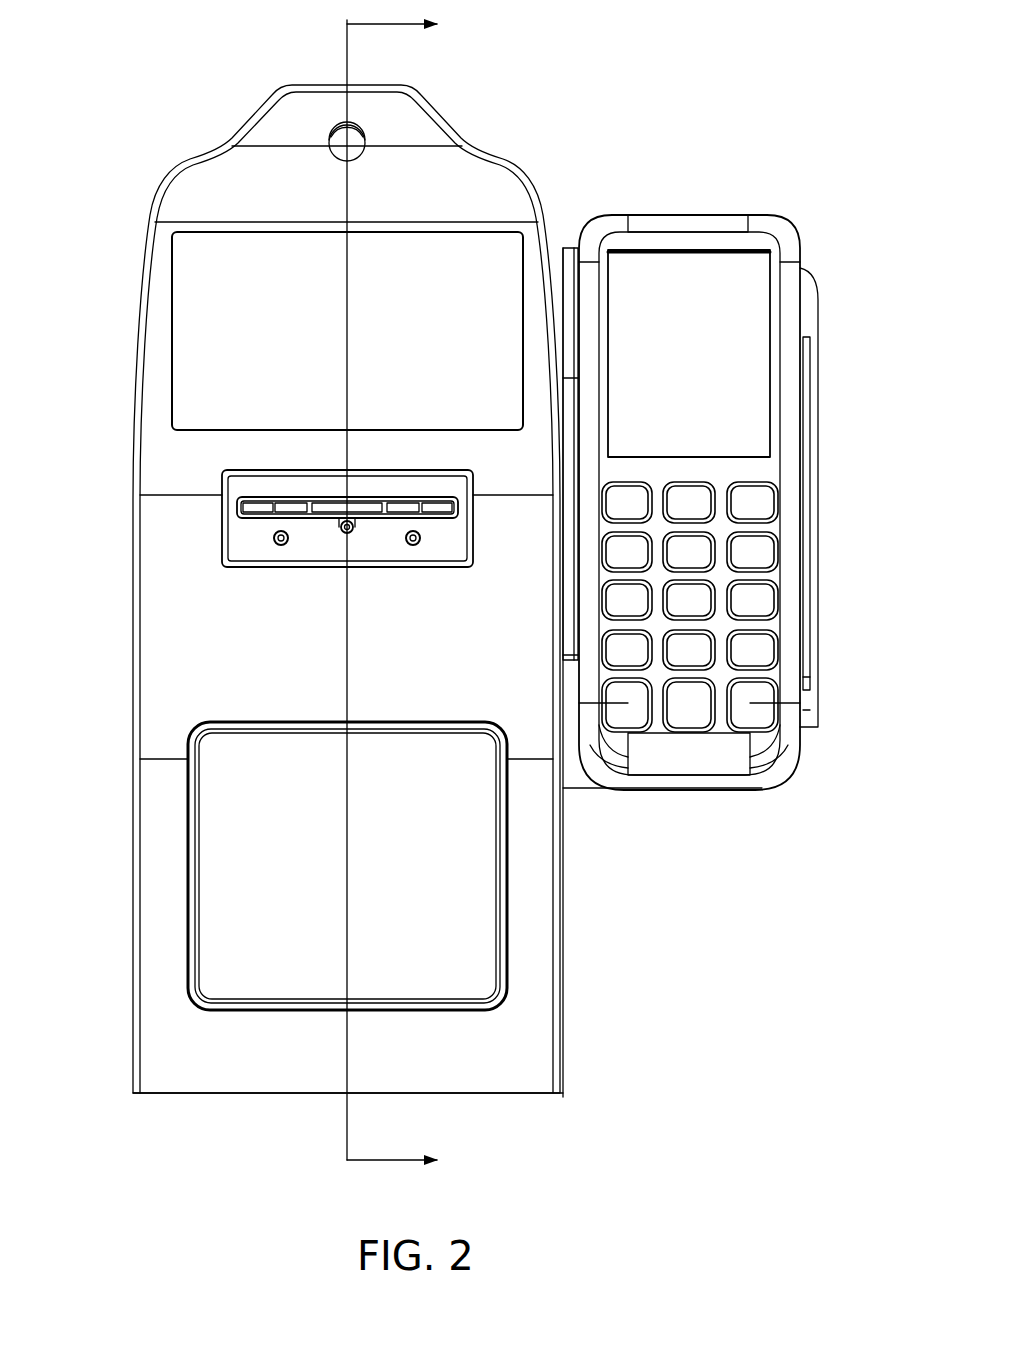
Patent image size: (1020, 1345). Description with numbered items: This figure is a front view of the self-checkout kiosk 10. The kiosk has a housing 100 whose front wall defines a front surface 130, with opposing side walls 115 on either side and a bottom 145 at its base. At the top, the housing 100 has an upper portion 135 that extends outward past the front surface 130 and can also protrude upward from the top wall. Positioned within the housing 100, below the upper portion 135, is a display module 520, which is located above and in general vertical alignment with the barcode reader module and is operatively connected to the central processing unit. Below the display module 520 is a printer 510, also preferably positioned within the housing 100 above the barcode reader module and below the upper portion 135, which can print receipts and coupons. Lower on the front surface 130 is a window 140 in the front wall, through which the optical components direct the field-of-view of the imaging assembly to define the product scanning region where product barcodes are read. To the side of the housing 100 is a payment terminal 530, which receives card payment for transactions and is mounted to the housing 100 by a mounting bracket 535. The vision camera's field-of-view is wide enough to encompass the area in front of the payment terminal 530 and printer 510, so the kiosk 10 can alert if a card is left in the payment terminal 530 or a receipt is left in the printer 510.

The self-checkout kiosk 10 is at (158, 68).
The housing 100 is at (168, 175).
The upper portion 135 is at (447, 101).
The side walls 115 is at (133, 692).
The bottom 145 is at (565, 1092).
The front surface 130 is at (173, 537).
The display module 520 is at (225, 318).
The printer 510 is at (218, 487).
The window 140 is at (237, 880).
The mounting bracket 535 is at (577, 250).
The payment terminal 530 is at (690, 215).